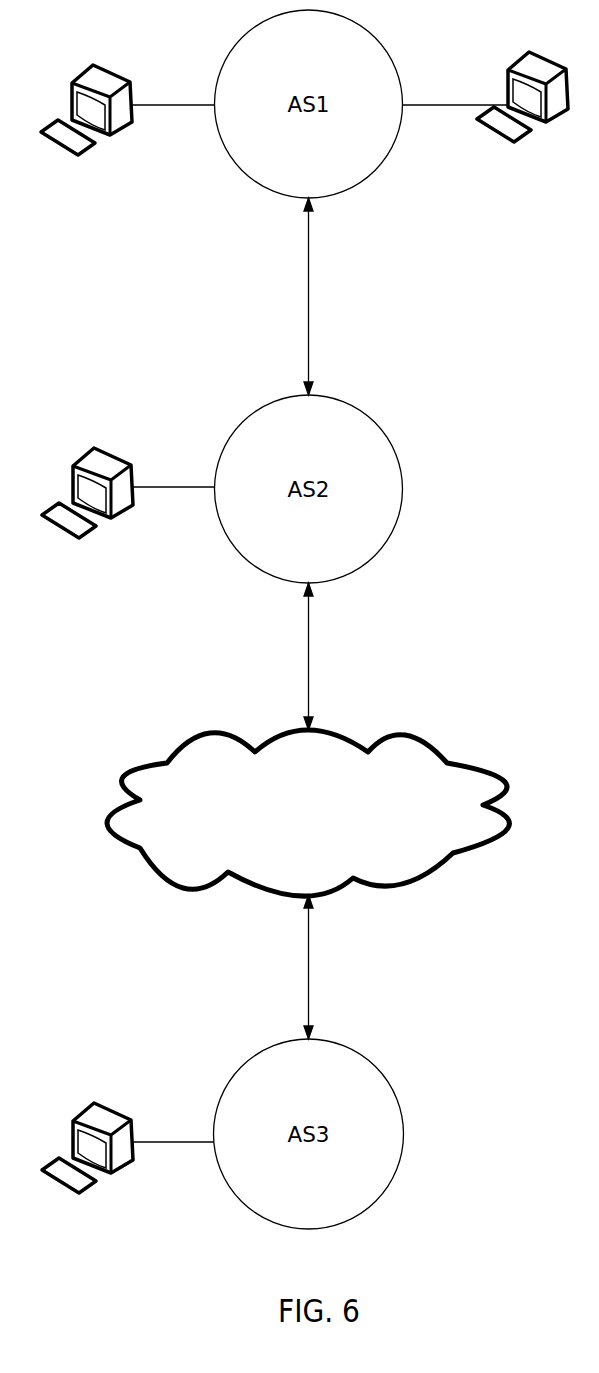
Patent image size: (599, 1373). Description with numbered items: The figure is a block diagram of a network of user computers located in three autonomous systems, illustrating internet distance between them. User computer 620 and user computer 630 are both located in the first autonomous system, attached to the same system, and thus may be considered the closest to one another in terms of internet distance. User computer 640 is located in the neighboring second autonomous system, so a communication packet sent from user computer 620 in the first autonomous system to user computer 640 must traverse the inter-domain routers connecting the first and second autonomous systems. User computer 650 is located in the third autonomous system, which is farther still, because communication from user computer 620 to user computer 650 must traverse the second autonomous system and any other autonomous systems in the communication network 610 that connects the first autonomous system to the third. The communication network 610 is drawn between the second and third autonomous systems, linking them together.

The communication network 610 is at (282, 813).
The user computer 620 is at (79, 157).
The user computer 630 is at (513, 143).
The user computer 640 is at (79, 540).
The user computer 650 is at (78, 1195).